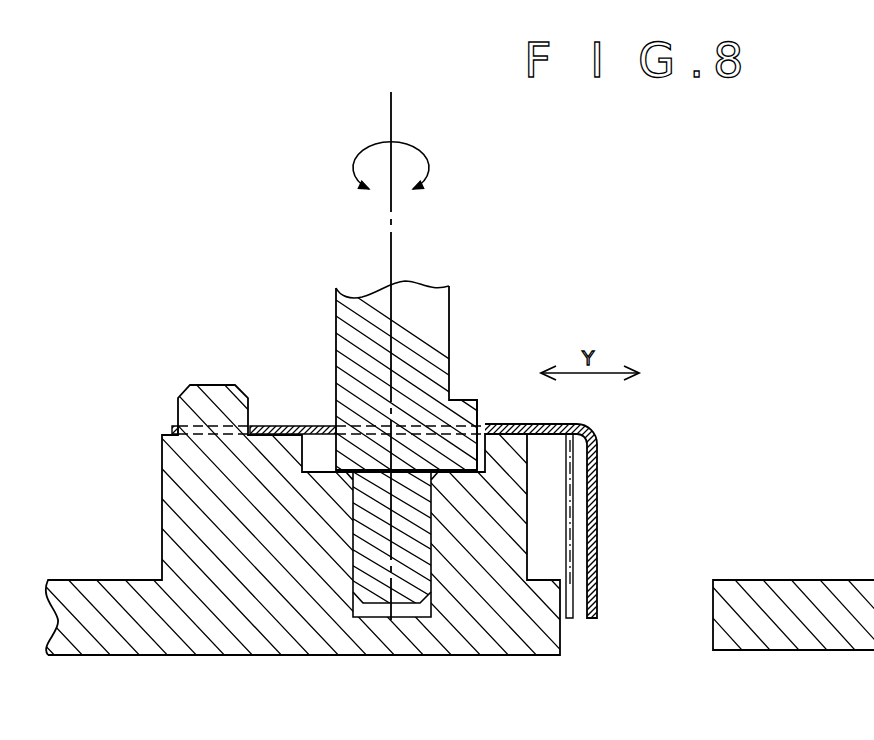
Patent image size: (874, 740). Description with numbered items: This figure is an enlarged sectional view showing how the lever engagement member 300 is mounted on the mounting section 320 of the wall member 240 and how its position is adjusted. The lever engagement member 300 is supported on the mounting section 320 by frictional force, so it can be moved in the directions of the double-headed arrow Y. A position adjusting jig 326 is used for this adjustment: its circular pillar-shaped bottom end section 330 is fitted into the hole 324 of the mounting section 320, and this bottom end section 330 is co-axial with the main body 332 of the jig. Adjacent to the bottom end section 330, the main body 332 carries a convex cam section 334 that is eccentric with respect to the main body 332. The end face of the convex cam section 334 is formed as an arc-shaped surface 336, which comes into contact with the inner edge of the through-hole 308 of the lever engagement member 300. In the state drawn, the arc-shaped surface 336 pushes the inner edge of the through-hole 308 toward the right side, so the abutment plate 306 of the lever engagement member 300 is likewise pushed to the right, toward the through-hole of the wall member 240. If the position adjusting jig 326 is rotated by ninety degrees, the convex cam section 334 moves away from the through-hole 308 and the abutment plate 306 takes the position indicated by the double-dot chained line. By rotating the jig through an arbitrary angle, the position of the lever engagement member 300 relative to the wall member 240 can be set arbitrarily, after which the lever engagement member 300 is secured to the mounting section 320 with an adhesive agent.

The wall member 240 is at (145, 636).
The lever engagement member 300 is at (565, 421).
The abutment plate 306 is at (573, 530).
The through-hole 308 is at (485, 472).
The mounting section 320 is at (160, 480).
The hole 324 is at (380, 612).
The position adjusting jig 326 is at (349, 288).
The bottom end section 330 is at (414, 590).
The main body 332 is at (425, 298).
The convex cam section 334 is at (470, 403).
The arc-shaped surface 336 is at (482, 416).